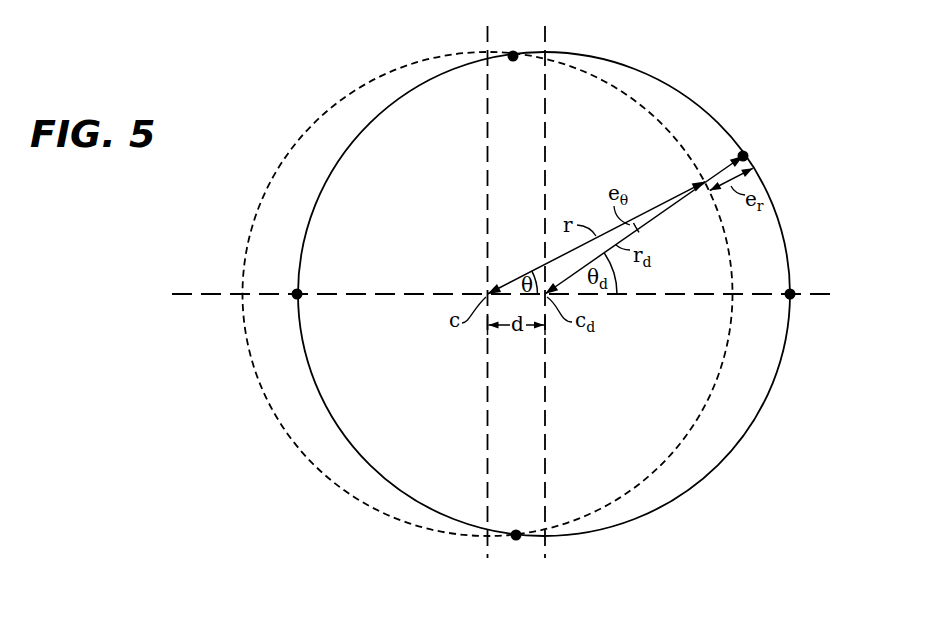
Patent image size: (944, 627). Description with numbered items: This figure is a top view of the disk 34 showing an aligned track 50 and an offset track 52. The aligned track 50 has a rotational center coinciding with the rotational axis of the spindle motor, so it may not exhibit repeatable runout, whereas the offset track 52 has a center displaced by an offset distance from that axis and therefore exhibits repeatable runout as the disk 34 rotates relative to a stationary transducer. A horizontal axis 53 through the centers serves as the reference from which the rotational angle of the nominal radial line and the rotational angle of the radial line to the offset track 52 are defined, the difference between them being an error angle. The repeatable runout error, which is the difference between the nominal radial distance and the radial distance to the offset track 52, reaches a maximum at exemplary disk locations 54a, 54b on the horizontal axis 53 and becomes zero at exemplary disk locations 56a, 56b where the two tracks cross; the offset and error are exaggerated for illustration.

The disk 34 is at (650, 46).
The aligned track 50 is at (284, 160).
The offset track 52 is at (703, 110).
The horizontal axis 53 is at (827, 295).
The disk location 54a is at (795, 288).
The disk location 54b is at (302, 288).
The disk location 56a is at (510, 52).
The disk location 56b is at (518, 540).